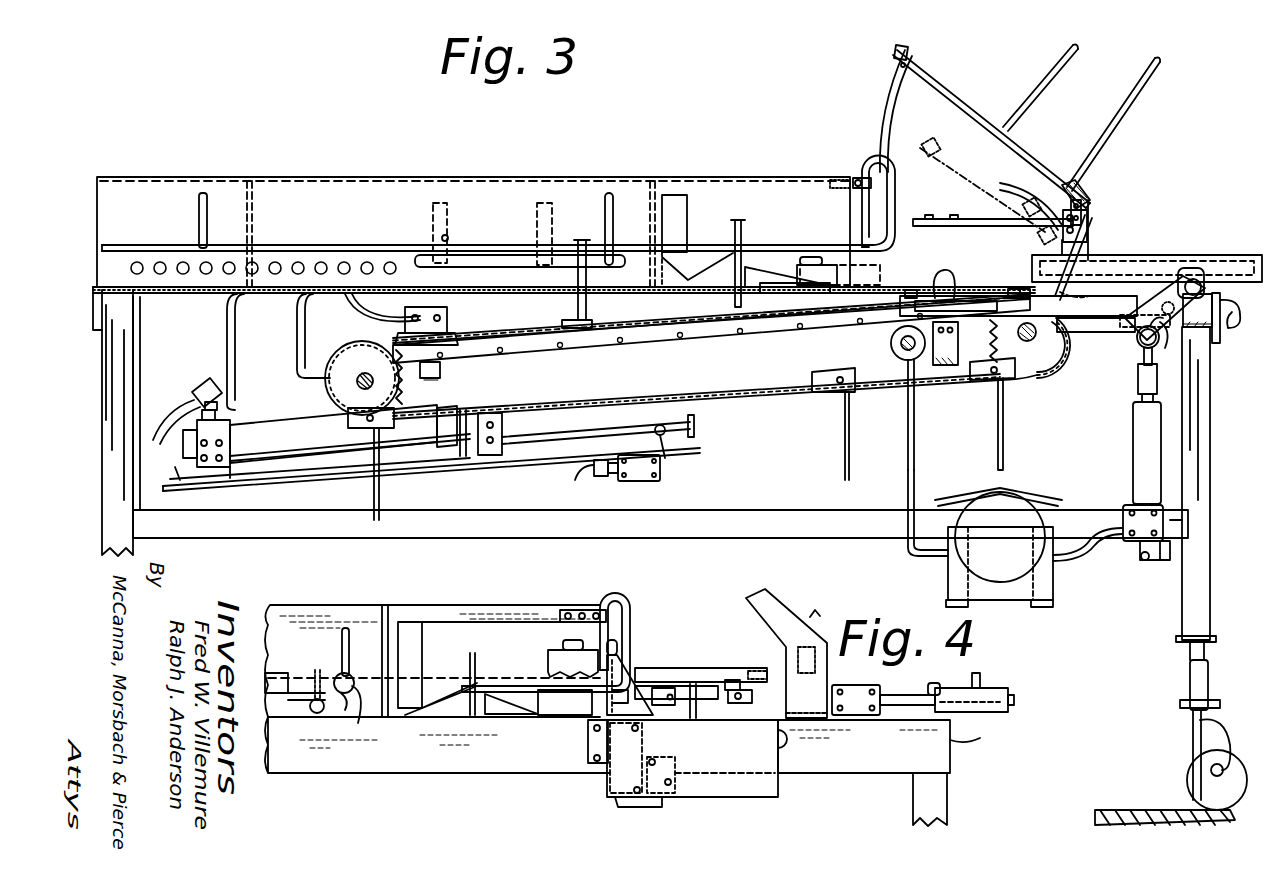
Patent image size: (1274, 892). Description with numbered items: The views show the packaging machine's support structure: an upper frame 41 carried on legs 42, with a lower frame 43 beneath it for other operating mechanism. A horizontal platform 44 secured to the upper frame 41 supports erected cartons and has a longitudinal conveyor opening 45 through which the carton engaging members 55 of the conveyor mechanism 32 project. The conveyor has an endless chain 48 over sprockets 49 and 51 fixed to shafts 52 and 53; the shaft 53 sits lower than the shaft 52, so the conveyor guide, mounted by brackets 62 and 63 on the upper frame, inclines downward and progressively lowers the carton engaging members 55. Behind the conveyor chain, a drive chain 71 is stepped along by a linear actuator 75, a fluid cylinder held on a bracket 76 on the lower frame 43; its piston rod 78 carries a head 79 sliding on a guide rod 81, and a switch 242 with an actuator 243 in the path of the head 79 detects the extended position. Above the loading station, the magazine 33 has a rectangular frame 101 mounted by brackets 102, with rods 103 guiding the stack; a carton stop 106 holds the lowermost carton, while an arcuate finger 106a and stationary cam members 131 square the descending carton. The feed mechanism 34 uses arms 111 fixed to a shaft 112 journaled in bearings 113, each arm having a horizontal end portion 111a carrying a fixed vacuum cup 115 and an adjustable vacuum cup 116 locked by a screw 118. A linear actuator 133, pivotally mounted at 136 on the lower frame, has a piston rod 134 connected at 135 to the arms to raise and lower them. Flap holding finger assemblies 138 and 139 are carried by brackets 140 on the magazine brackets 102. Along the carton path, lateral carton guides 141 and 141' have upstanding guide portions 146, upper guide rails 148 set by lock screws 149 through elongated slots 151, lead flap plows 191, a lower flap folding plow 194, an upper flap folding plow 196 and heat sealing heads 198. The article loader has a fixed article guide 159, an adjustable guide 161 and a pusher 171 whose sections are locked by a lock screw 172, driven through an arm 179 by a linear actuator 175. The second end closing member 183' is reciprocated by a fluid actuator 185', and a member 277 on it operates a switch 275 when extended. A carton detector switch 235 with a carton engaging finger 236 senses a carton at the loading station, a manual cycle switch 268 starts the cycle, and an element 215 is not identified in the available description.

In FIG. 3, the first lateral carton guide and end folding apparatus 141 is at (378, 149).
In FIG. 4, the second lateral carton guide and end folding apparatus 141' is at (389, 582).
In FIG. 3, the upstanding lateral carton guide portion 146 is at (495, 186).
In FIG. 4, the upstanding lateral carton guide portion 146 is at (318, 622).
In FIG. 3, the vertically elongated slot 151 is at (198, 210).
In FIG. 4, the vertically elongated slot 151 is at (343, 645).
In FIG. 3, the heat sealing head 198 is at (487, 272).
In FIG. 3, the upper flap folding plow 196 is at (683, 265).
In FIG. 4, the upper flap folding plow 196 is at (437, 690).
In FIG. 3, the carton engaging member 55 is at (375, 500).
In FIG. 3, the lower flap folding plow 194 is at (775, 285).
In FIG. 4, the lower flap folding plow 194 is at (498, 703).
In FIG. 3, the plow 191 is at (842, 266).
In FIG. 4, the plow 191 is at (572, 703).
In FIG. 3, the upper carton guide rail 148 is at (817, 256).
In FIG. 3, the cycle switch 268 is at (795, 266).
In FIG. 4, the cycle switch 268 is at (565, 638).
In FIG. 3, the conveyor mechanism 32 is at (692, 326).
In FIG. 3, the platform 44 is at (190, 290).
In FIG. 3, the conveyor opening 45 is at (362, 290).
In FIG. 3, the upper frame 41 is at (175, 330).
In FIG. 3, the legs 42 is at (110, 423).
In FIG. 3, the lower frame 43 is at (325, 528).
In FIG. 4, the lower frame 43 is at (437, 745).
In FIG. 3, the shaft 53 is at (357, 382).
In FIG. 3, the sprocket 51 is at (400, 396).
In FIG. 3, the bracket 62 is at (440, 370).
In FIG. 3, the drive chain 71 is at (545, 402).
In FIG. 3, the guide rod 81 is at (582, 442).
In FIG. 3, the head 79 is at (503, 440).
In FIG. 3, the switch actuator 243 is at (680, 428).
In FIG. 3, the switch 242 is at (648, 476).
In FIG. 3, the linear actuator 75 is at (328, 450).
In FIG. 3, the bracket 76 is at (412, 462).
In FIG. 3, the piston rod 78 is at (462, 458).
In FIG. 3, the endless chain 48 is at (878, 393).
In FIG. 3, the bracket 63 is at (947, 365).
In FIG. 3, the sprocket 49 is at (1040, 355).
In FIG. 3, the shaft 52 is at (1055, 330).
In FIG. 3, the piston rod connection 135 is at (1145, 348).
In FIG. 3, the piston rod 134 is at (1155, 380).
In FIG. 3, the linear actuator 133 is at (1162, 455).
In FIG. 3, the pivot mounting 136 is at (1142, 560).
In FIG. 3, the tank 215 is at (1012, 555).
In FIG. 3, the screw 118 is at (1020, 338).
In FIG. 3, the switch 235 is at (985, 318).
In FIG. 3, the vacuum cup 115 is at (910, 288).
In FIG. 3, the carton engaging finger 236 is at (948, 280).
In FIG. 3, the feed mechanism 34 is at (1013, 286).
In FIG. 3, the vacuum cup 116 is at (1026, 286).
In FIG. 3, the end portion 111a is at (1090, 300).
In FIG. 3, the arms 111 is at (1166, 262).
In FIG. 3, the bearings 113 is at (1188, 268).
In FIG. 3, the shaft 112 is at (1203, 300).
In FIG. 3, the first upper flap holding finger assembly 138 is at (920, 216).
In FIG. 3, the brackets 140 is at (1030, 186).
In FIG. 3, the stationary cam members 131 is at (893, 166).
In FIG. 4, the stationary cam members 131 is at (632, 638).
In FIG. 3, the arcuate finger 106a is at (882, 106).
In FIG. 3, the carton stop 106 is at (905, 50).
In FIG. 3, the rectangular frame 101 is at (935, 70).
In FIG. 3, the brackets 102 is at (1017, 140).
In FIG. 4, the brackets 102 is at (760, 588).
In FIG. 3, the rods 103 is at (1135, 92).
In FIG. 3, the magazine 33 is at (1072, 178).
In FIG. 4, the lock screws 149 is at (345, 700).
In FIG. 4, the fixed lateral article guide 159 is at (605, 690).
In FIG. 4, the arm 179 is at (640, 802).
In FIG. 4, the linear actuator 175 is at (675, 768).
In FIG. 4, the second upper flap holding finger assembly 139 is at (703, 668).
In FIG. 4, the pusher 171 is at (658, 693).
In FIG. 4, the second laterally adjustable guide 161 is at (732, 678).
In FIG. 4, the lock screw 172 is at (697, 700).
In FIG. 4, the switch 275 is at (857, 705).
In FIG. 4, the fluid actuator 185' is at (1005, 697).
In FIG. 4, the member 277 is at (985, 680).
In FIG. 4, the end closing member 183' is at (994, 728).